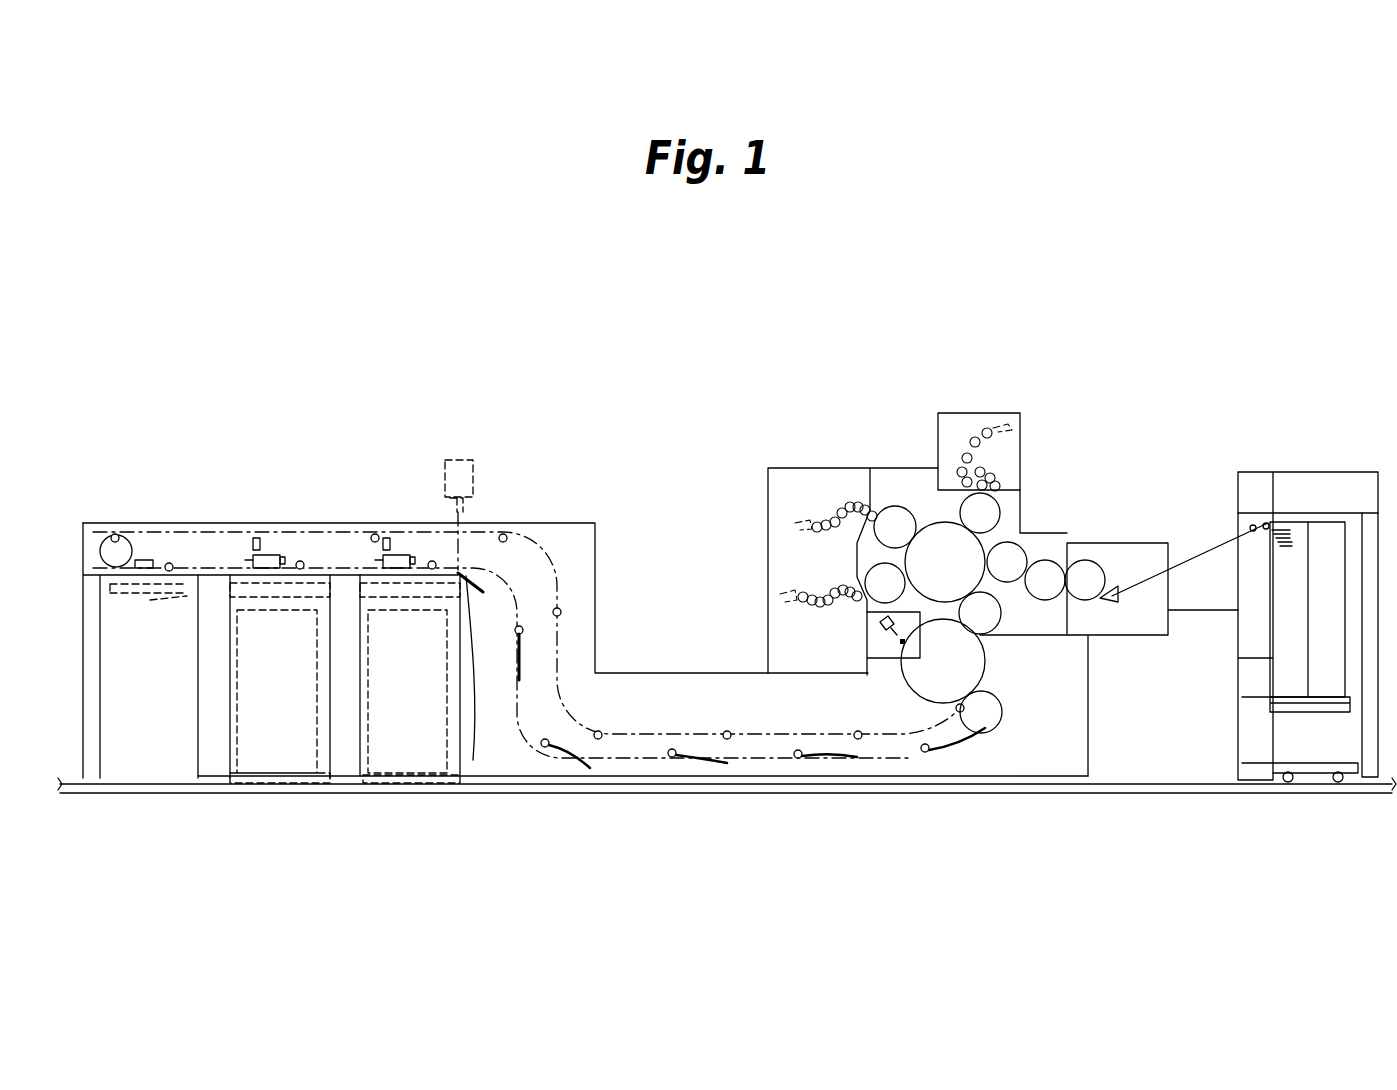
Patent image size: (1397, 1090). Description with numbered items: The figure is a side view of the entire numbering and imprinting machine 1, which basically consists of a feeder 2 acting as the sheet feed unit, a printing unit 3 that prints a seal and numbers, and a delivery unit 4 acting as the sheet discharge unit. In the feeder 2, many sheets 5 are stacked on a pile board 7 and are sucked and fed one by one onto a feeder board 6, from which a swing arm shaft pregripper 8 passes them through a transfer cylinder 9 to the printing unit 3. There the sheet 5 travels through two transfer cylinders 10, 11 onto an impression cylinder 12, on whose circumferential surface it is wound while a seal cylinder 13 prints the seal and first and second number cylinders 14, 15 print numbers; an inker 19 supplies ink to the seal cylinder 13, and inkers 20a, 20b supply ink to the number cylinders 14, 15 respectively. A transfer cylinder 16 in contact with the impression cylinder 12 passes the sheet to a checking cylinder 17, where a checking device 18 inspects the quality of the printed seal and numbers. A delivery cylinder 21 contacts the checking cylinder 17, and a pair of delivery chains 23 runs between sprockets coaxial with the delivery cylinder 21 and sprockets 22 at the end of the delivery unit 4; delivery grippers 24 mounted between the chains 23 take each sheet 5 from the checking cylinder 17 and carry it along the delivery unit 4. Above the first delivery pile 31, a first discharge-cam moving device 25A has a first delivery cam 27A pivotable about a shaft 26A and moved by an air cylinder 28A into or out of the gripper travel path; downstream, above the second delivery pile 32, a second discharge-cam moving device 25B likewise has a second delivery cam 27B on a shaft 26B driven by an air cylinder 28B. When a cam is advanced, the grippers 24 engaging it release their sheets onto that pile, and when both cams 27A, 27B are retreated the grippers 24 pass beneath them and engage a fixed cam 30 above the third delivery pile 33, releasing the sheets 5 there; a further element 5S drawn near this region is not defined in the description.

The numbering and imprinting machine 1 is at (846, 328).
The feeder 2 is at (1354, 455).
The printing unit 3 is at (1005, 388).
The delivery unit 4 is at (340, 478).
The sheets 5 is at (237, 700).
The sheet detection sensor 5S is at (110, 588).
The feeder board 6 is at (1192, 553).
The pile board 7 is at (1310, 712).
The swing arm shaft pregripper 8 is at (1108, 600).
The transfer cylinder 9 is at (1100, 565).
The transfer cylinder 10 is at (1050, 560).
The transfer cylinder 11 is at (1020, 540).
The impression cylinder 12 is at (930, 522).
The seal cylinder 13 is at (1000, 505).
The first number cylinder 14 is at (893, 505).
The second number cylinder 15 is at (862, 558).
The transfer cylinder 16 is at (995, 624).
The checking cylinder 17 is at (987, 665).
The checking device 18 is at (870, 638).
The inker 19 is at (966, 435).
The inker 20a is at (826, 506).
The inker 20b is at (824, 583).
The delivery cylinder 21 is at (1003, 720).
The sprockets 22 is at (100, 553).
The delivery chains 23 is at (645, 760).
The delivery grippers 24 is at (113, 534).
The first discharge-cam moving device 25A is at (403, 540).
The second discharge-cam moving device 25B is at (266, 537).
The shaft 26A is at (414, 556).
The shaft 26B is at (285, 558).
The first delivery cam 27A is at (378, 555).
The second delivery cam 27B is at (245, 558).
The air cylinder 28A is at (386, 538).
The air cylinder 28B is at (250, 538).
The fixed cam 30 is at (145, 560).
The first delivery pile 31 is at (393, 781).
The second delivery pile 32 is at (262, 781).
The third delivery pile 33 is at (150, 600).